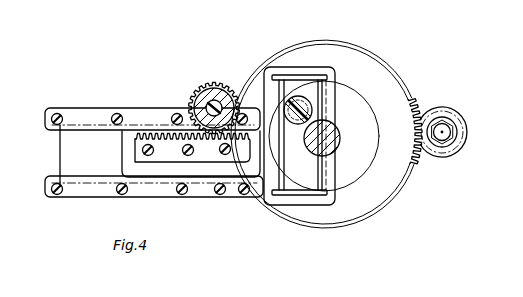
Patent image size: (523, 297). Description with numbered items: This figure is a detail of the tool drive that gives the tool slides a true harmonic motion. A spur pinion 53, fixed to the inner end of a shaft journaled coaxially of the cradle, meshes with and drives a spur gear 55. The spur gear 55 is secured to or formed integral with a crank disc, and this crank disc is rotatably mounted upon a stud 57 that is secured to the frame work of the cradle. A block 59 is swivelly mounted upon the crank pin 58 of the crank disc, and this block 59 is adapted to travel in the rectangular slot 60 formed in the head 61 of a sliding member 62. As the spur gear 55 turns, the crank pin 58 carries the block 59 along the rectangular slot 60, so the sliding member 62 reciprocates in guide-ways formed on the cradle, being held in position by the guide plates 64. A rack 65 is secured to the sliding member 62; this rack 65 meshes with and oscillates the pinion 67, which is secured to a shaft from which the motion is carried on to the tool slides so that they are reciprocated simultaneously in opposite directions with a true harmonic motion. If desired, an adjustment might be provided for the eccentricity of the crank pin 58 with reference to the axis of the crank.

The spur pinion 53 is at (470, 126).
The spur gear 55 is at (372, 193).
The stud 57 is at (334, 138).
The crank pin 58 is at (313, 114).
The block 59 is at (310, 96).
The rectangular slot 60 is at (292, 187).
The head 61 is at (327, 167).
The sliding member 62 is at (200, 165).
The guide plates 64 is at (93, 118).
The rack 65 is at (165, 148).
The pinion 67 is at (211, 85).